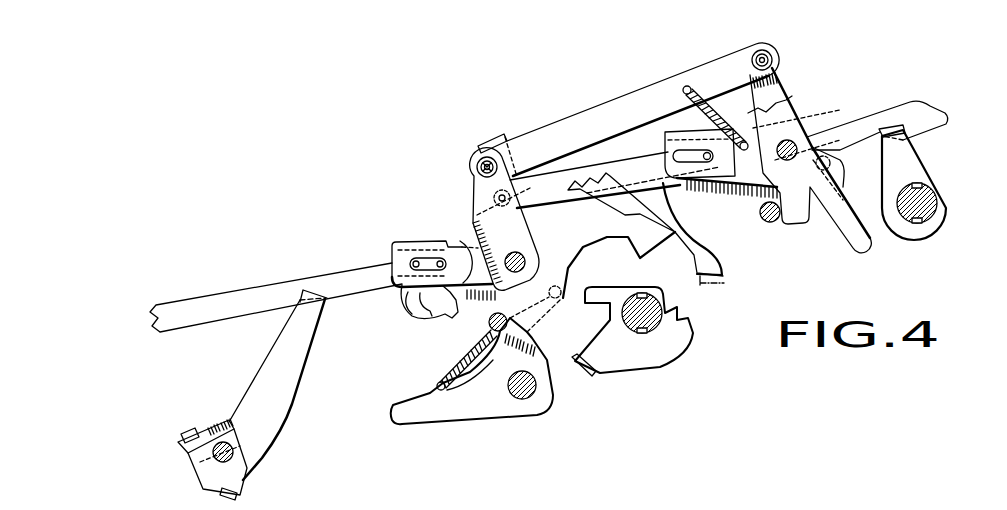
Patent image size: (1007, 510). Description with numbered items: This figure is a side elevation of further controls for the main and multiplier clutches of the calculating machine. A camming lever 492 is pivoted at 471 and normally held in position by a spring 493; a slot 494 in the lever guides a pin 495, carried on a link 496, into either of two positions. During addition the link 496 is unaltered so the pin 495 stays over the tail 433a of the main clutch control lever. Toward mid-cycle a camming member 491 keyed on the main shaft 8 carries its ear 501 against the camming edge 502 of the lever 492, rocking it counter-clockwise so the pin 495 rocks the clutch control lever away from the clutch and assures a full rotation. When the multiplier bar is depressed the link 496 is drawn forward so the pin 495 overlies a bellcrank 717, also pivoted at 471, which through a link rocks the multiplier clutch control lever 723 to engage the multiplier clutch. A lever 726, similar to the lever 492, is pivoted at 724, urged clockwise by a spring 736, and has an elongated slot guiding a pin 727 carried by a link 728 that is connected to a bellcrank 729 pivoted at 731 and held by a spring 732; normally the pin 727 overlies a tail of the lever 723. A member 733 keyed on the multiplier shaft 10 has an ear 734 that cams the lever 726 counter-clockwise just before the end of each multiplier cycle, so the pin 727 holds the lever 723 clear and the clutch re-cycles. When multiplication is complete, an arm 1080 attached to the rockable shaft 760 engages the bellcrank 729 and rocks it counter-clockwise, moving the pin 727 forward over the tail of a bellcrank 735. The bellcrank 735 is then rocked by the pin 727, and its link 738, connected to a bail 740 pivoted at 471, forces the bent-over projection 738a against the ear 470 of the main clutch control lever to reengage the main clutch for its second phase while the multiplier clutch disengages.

The main shaft 8 is at (652, 316).
The multiplier shaft 10 is at (933, 206).
The ear 470 is at (476, 172).
The pivot 471 is at (521, 258).
The camming member 491 is at (660, 368).
The camming lever 492 is at (583, 252).
The spring 493 is at (537, 316).
The slot 494 is at (412, 256).
The pin 495 is at (402, 290).
The link 496 is at (380, 265).
The ear 501 is at (580, 378).
The camming edge 502 is at (643, 259).
The bellcrank 717 is at (417, 302).
The multiplier clutch control lever 723 is at (690, 178).
The pivot 724 is at (800, 145).
The lever 726 is at (910, 103).
The pin 727 is at (674, 172).
The link 728 is at (617, 165).
The bellcrank 729 is at (498, 415).
The pivot 731 is at (534, 399).
The spring 732 is at (447, 369).
The camming member 733 is at (933, 172).
The ear 734 is at (905, 140).
The bellcrank 735 is at (787, 88).
The spring 736 is at (772, 224).
The link 738 is at (604, 106).
The bent-over projection 738a is at (517, 177).
The bail 740 is at (477, 199).
The rockable shaft 760 is at (250, 460).
The arm 1080 is at (287, 400).
The tail 433a is at (430, 313).